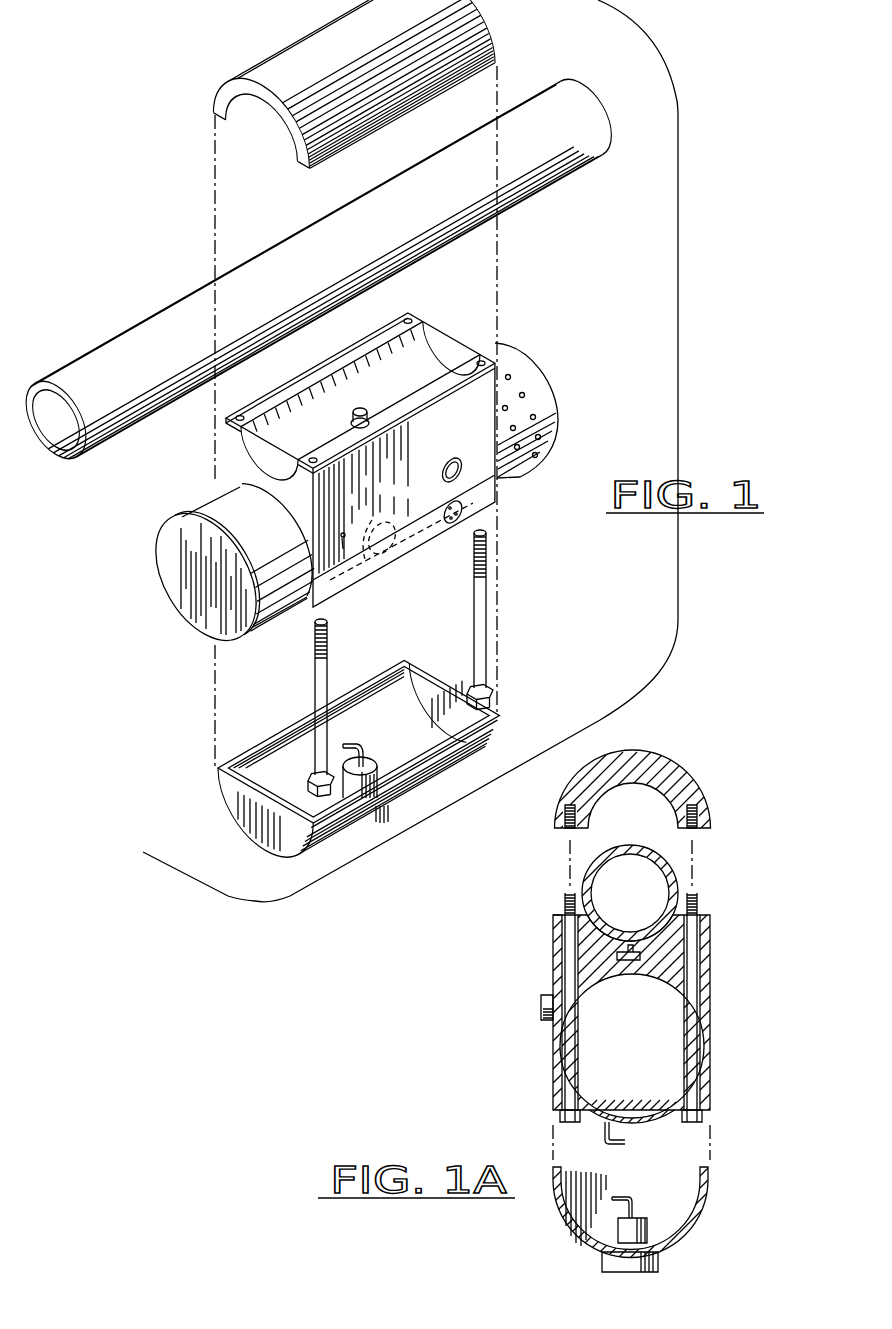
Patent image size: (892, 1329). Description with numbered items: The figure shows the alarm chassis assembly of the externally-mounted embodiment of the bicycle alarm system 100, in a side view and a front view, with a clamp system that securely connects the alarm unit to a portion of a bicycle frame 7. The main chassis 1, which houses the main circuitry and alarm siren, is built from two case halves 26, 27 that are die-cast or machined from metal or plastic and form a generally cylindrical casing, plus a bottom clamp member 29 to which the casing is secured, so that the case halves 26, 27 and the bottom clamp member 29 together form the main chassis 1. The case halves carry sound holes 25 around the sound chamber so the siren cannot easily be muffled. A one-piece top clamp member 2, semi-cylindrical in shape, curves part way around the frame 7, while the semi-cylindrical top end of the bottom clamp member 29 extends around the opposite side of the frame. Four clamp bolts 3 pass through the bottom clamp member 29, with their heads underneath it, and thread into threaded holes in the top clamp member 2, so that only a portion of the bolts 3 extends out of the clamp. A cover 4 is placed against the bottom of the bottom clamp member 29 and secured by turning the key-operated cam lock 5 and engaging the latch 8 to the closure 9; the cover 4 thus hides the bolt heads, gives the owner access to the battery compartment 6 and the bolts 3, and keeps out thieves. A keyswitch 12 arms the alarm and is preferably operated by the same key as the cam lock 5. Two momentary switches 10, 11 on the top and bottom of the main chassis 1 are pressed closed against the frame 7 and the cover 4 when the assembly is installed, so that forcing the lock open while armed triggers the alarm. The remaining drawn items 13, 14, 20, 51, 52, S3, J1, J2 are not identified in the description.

In FIG. 1, the main chassis 1 is at (505, 315).
In FIG. 1A, the main chassis 1 is at (710, 963).
In FIG. 1, the top clamp member 2 is at (295, 62).
In FIG. 1A, the top clamp member 2 is at (673, 762).
In FIG. 1, the clamp bolts 3 is at (314, 695).
In FIG. 1A, the clamp bolts 3 is at (560, 1115).
In FIG. 1, the cover 4 is at (232, 794).
In FIG. 1A, the cover 4 is at (562, 1213).
In FIG. 1, the key-operated cam lock 5 is at (388, 811).
In FIG. 1A, the key-operated cam lock 5 is at (605, 1263).
In FIG. 1, the battery compartment 6 is at (274, 617).
In FIG. 1, the bicycle frame 7 is at (135, 347).
In FIG. 1A, the bicycle frame 7 is at (582, 880).
In FIG. 1, the latch 8 is at (363, 747).
In FIG. 1, the closure 9 is at (338, 533).
In FIG. 1A, the closure 9 is at (626, 1142).
In FIG. 1, the momentary switch 10 is at (392, 556).
In FIG. 1, the momentary switch 11 is at (363, 406).
In FIG. 1A, the momentary switch 11 is at (628, 945).
In FIG. 1, the keyswitch 12 is at (434, 465).
In FIG. 1, the opening 13 is at (452, 532).
In FIG. 1A, the stud 14 is at (543, 995).
In FIG. 1A, the clamp assembly 20 is at (712, 722).
In FIG. 1, the sound holes 25 is at (547, 460).
In FIG. 1, the case half 26 is at (190, 503).
In FIG. 1, the case half 27 is at (292, 610).
In FIG. 1A, the bottom clamp member 29 is at (552, 922).
In FIG. 1, the seat 51 is at (350, 426).
In FIG. 1, the hole 52 is at (370, 565).
In FIG. 1, the grommet S3 is at (456, 456).
In FIG. 1A, the nut J1 is at (541, 1007).
In FIG. 1, the grommet J2 is at (463, 510).
In FIG. 1A, the alarm system 100 is at (520, 1048).